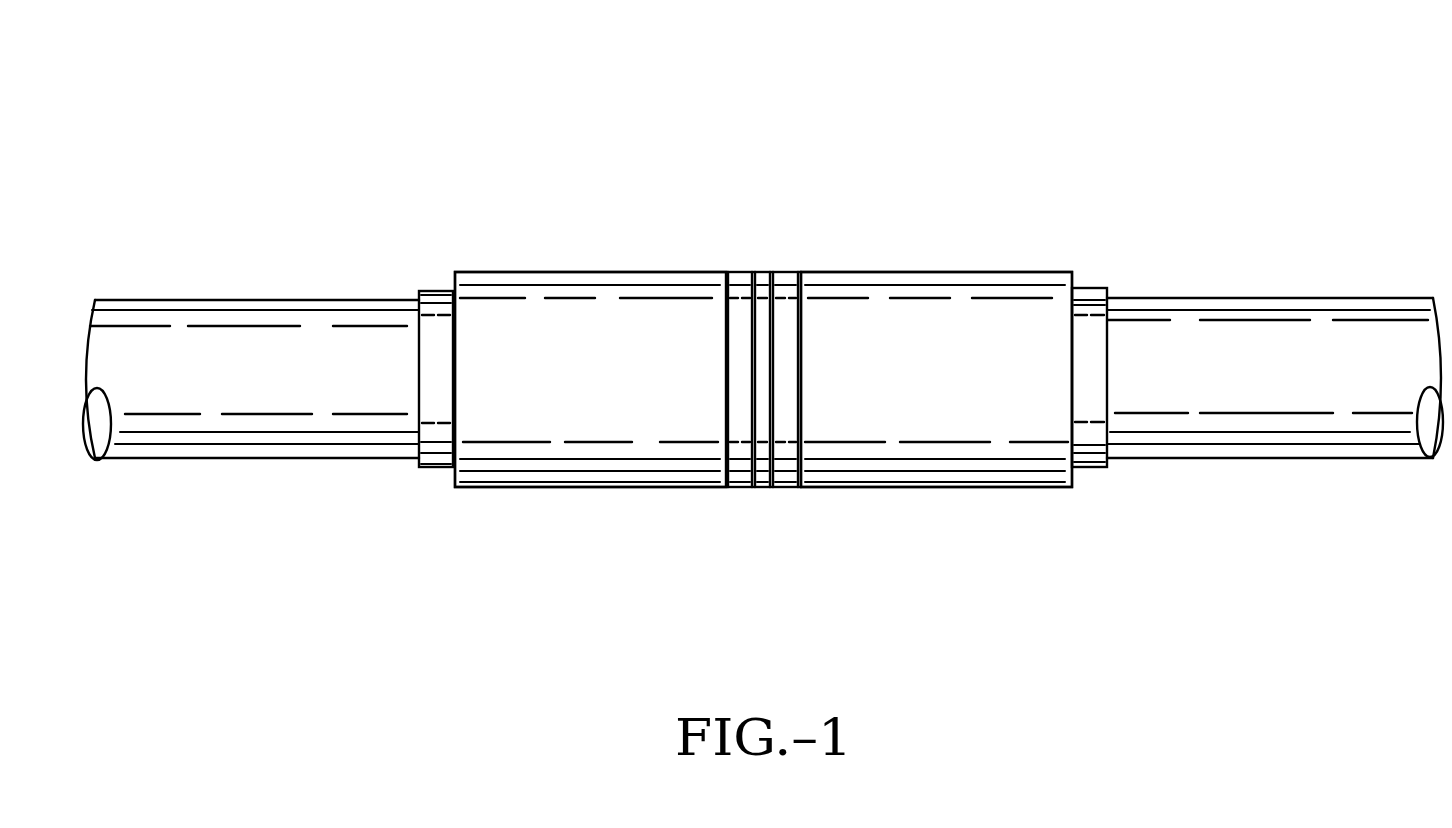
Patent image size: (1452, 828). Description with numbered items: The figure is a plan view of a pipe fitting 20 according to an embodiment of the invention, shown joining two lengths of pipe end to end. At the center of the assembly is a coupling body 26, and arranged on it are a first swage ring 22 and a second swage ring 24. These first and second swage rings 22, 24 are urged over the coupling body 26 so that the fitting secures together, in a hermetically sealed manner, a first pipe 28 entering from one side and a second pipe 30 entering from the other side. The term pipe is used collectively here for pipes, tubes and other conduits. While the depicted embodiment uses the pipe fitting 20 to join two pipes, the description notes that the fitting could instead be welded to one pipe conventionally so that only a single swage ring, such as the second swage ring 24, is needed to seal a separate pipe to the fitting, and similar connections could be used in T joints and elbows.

The pipe fitting 20 is at (743, 152).
The first swage ring 22 is at (658, 448).
The second swage ring 24 is at (935, 453).
The coupling body 26 is at (438, 430).
The first pipe 28 is at (280, 305).
The second pipe 30 is at (1202, 305).